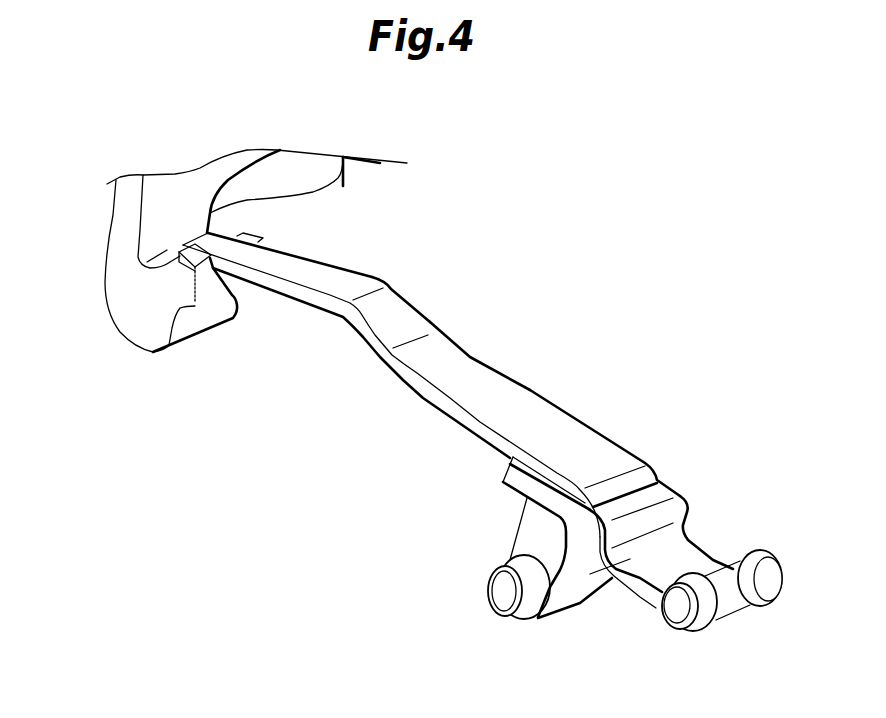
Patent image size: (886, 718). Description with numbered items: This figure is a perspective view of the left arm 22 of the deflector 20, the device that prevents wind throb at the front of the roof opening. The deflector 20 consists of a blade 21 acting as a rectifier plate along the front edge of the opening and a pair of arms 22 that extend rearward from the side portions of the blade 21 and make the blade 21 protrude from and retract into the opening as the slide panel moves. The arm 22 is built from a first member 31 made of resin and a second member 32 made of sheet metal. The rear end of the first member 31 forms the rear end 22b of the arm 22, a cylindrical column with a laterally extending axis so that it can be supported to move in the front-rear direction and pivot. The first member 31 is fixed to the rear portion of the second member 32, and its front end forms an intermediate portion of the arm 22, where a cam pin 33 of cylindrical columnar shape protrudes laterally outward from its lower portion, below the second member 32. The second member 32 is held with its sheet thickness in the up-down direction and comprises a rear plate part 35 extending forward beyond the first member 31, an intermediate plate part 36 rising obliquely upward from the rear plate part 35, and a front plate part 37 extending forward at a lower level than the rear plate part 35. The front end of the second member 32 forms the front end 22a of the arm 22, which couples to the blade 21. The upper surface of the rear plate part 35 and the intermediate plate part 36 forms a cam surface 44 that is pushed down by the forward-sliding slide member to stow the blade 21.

The deflector 20 is at (474, 183).
The blade 21 is at (110, 207).
The arm 22 is at (531, 387).
The front end of the arm 22a is at (192, 248).
The rear end of the arm 22b is at (722, 607).
The first member 31 is at (700, 552).
The second member 32 is at (477, 367).
The cam pin 33 is at (498, 593).
The rear plate part 35 is at (597, 446).
The intermediate plate part 36 is at (400, 308).
The front plate part 37 is at (317, 267).
The cam surface 44 is at (440, 377).